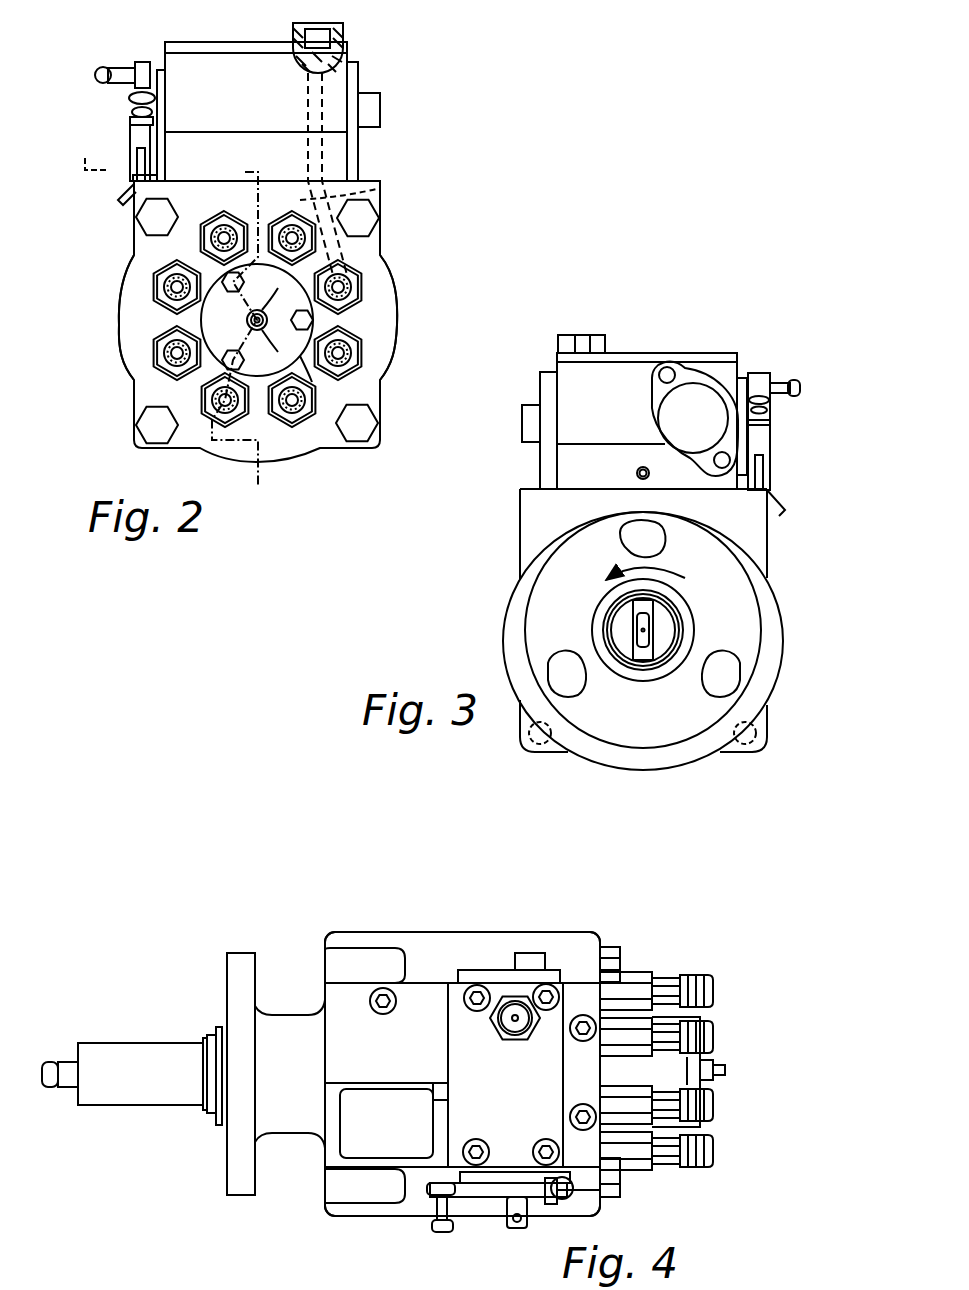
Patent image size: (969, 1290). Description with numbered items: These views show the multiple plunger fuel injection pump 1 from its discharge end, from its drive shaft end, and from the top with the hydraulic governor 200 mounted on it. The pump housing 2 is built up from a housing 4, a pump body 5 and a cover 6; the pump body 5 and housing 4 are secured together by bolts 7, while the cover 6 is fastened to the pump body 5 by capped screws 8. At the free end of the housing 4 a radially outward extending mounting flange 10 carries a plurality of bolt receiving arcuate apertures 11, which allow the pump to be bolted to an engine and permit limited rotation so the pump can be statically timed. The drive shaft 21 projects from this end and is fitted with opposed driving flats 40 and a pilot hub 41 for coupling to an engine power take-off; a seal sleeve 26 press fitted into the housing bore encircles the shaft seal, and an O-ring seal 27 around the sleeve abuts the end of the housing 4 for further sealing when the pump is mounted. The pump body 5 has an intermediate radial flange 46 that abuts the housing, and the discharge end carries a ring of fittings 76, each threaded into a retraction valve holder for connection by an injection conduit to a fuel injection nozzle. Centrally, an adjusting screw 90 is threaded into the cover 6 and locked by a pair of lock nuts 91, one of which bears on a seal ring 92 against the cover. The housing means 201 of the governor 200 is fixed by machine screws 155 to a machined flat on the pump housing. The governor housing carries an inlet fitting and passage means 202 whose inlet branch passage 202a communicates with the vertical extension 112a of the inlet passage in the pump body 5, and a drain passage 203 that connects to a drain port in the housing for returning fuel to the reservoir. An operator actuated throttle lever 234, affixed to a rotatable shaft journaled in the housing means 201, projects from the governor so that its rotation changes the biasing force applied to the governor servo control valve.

In FIG. 2, the fuel injection pump 1 is at (108, 386).
In FIG. 3, the fuel injection pump 1 is at (494, 579).
In FIG. 4, the fuel injection pump 1 is at (328, 1232).
In FIG. 3, the pump housing 2 is at (500, 626).
In FIG. 4, the pump housing 2 is at (396, 1227).
In FIG. 3, the housing 4 is at (786, 626).
In FIG. 4, the housing 4 is at (293, 1122).
In FIG. 2, the pump body 5 is at (386, 292).
In FIG. 4, the pump body 5 is at (674, 1070).
In FIG. 2, the cover 6 is at (300, 360).
In FIG. 4, the cover 6 is at (702, 1128).
In FIG. 2, the bolts 7 is at (366, 218).
In FIG. 4, the bolts 7 is at (614, 958).
In FIG. 2, the capped screws 8 is at (230, 280).
In FIG. 3, the mounting flange 10 is at (740, 580).
In FIG. 4, the mounting flange 10 is at (246, 953).
In FIG. 3, the bolt receiving arcuate apertures 11 is at (628, 546).
In FIG. 3, the drive shaft 21 is at (672, 620).
In FIG. 4, the drive shaft 21 is at (115, 1043).
In FIG. 4, the seal sleeve 26 is at (210, 1092).
In FIG. 4, the O-ring seal 27 is at (220, 1125).
In FIG. 3, the driving flats 40 is at (633, 633).
In FIG. 4, the driving flats 40 is at (66, 1062).
In FIG. 3, the pilot hub 41 is at (646, 662).
In FIG. 4, the pilot hub 41 is at (48, 1062).
In FIG. 2, the radial flange 46 is at (372, 181).
In FIG. 3, the radial flange 46 is at (525, 490).
In FIG. 2, the fitting 76 is at (226, 236).
In FIG. 4, the fitting 76 is at (708, 1034).
In FIG. 2, the adjusting screw 90 is at (247, 320).
In FIG. 4, the adjusting screw 90 is at (726, 1070).
In FIG. 2, the lock nuts 91 is at (262, 330).
In FIG. 2, the seal ring 92 is at (262, 312).
In FIG. 2, the vertical extension of inlet passage 112a is at (380, 188).
In FIG. 4, the machine screws 155 is at (398, 998).
In FIG. 2, the governor 200 is at (364, 50).
In FIG. 3, the governor 200 is at (708, 350).
In FIG. 4, the governor 200 is at (579, 966).
In FIG. 2, the housing means 201 is at (232, 60).
In FIG. 3, the housing means 201 is at (565, 370).
In FIG. 4, the housing means 201 is at (465, 1062).
In FIG. 2, the inlet fitting and passage means 202 is at (343, 32).
In FIG. 3, the inlet fitting and passage means 202 is at (586, 338).
In FIG. 4, the inlet fitting and passage means 202 is at (506, 1002).
In FIG. 2, the inlet branch passage 202a is at (322, 98).
In FIG. 3, the drain passage 203 is at (636, 472).
In FIG. 2, the throttle lever 234 is at (140, 158).
In FIG. 3, the throttle lever 234 is at (762, 468).
In FIG. 4, the throttle lever 234 is at (487, 1198).